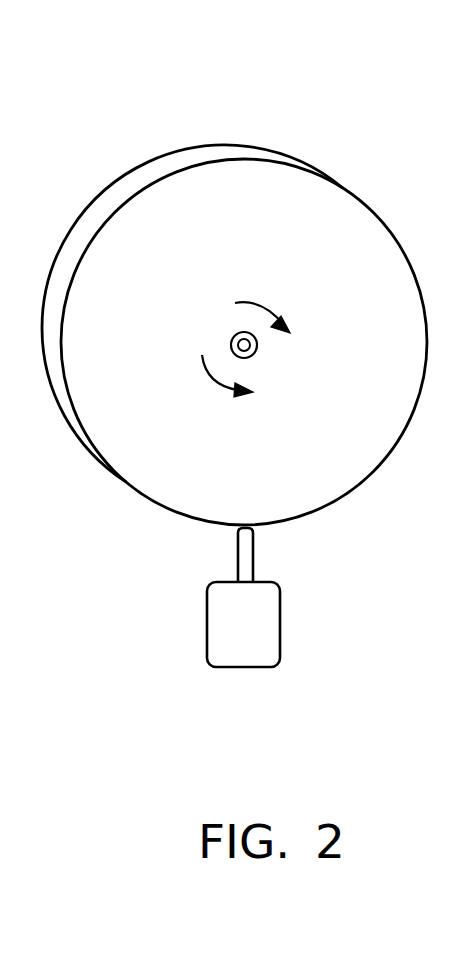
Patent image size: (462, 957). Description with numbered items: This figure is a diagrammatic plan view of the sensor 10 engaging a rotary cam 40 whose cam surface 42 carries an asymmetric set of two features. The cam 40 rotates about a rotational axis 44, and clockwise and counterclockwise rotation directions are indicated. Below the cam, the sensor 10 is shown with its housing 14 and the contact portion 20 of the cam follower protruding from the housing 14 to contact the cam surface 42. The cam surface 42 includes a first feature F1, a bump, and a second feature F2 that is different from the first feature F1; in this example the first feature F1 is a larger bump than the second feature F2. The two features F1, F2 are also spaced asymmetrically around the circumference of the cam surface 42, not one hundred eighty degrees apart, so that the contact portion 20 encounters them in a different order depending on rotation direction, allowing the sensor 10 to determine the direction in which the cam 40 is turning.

The sensor 10 is at (303, 612).
The housing 14 is at (205, 612).
The contact portion 20 is at (233, 565).
The cam 40 is at (244, 378).
The cam surface 42 is at (380, 480).
The rotational axis 44 is at (232, 338).
The first feature F1 is at (47, 297).
The second feature F2 is at (237, 147).